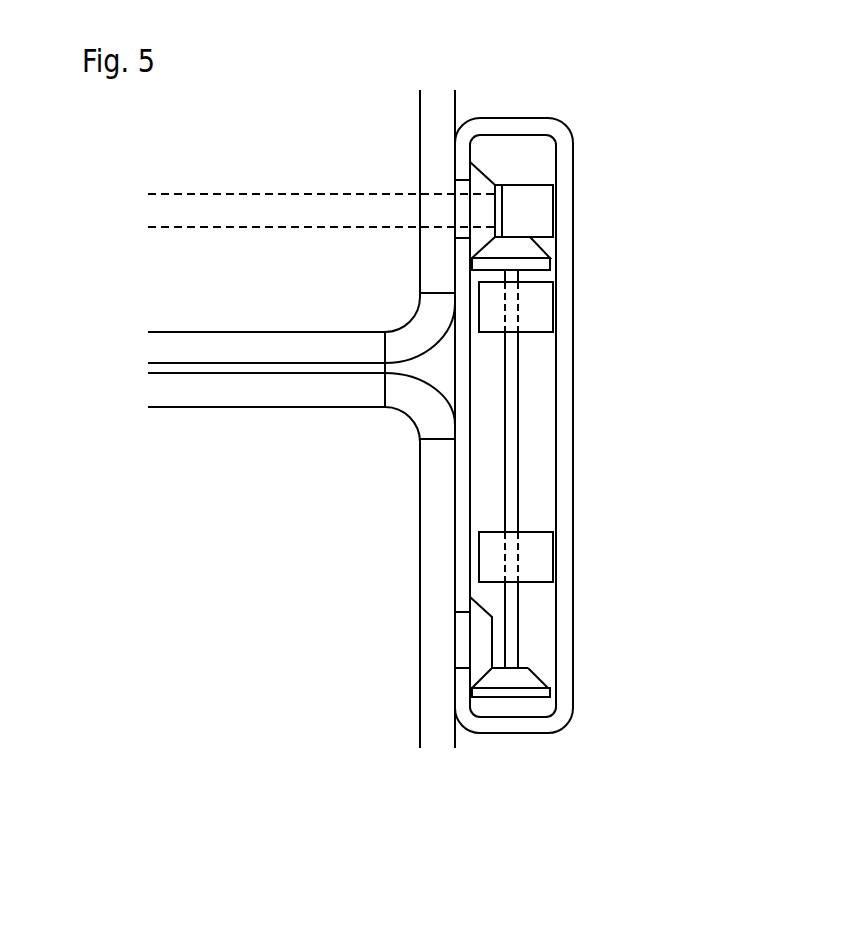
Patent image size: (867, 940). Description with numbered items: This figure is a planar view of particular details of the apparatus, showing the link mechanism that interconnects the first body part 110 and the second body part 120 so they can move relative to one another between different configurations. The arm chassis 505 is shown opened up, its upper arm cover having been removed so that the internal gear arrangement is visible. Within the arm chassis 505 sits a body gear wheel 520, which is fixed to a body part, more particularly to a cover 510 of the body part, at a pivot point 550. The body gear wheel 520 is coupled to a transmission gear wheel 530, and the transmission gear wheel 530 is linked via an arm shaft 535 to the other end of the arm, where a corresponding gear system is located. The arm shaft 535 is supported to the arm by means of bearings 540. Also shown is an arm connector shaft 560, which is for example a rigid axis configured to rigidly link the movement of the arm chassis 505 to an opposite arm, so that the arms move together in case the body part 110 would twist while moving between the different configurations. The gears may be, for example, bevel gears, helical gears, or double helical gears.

The first body part 110 is at (203, 158).
The second body part 120 is at (203, 478).
The arm chassis 505 is at (568, 382).
The cover 510 is at (374, 401).
The body gear wheel 520 is at (444, 367).
The transmission gear wheel 530 is at (577, 426).
The arm shaft 535 is at (593, 469).
The bearings 540 is at (580, 399).
The pivot point 550 is at (379, 424).
The arm connector shaft 560 is at (321, 166).